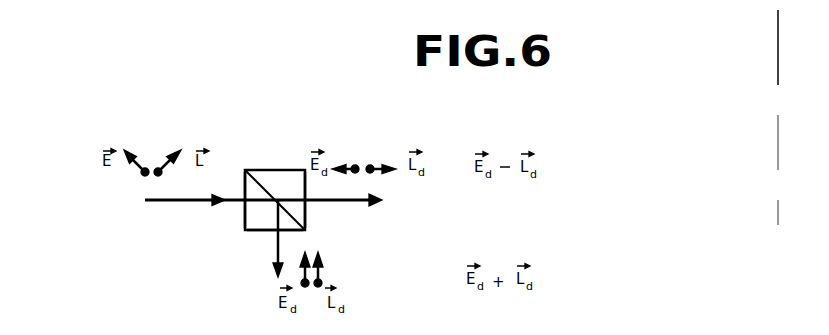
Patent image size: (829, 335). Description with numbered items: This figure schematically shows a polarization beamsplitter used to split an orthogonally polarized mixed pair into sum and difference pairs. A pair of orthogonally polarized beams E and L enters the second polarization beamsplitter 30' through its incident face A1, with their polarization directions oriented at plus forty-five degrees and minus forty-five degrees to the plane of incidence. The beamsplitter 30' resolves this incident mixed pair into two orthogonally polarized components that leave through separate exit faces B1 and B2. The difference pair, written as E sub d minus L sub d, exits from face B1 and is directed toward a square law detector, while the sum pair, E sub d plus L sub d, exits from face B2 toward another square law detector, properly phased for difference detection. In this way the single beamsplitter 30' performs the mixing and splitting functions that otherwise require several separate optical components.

The second polarization beamsplitter 30' is at (275, 177).
The incident face A1 is at (243, 213).
The first exit face B1 is at (308, 215).
The second exit face B2 is at (257, 233).